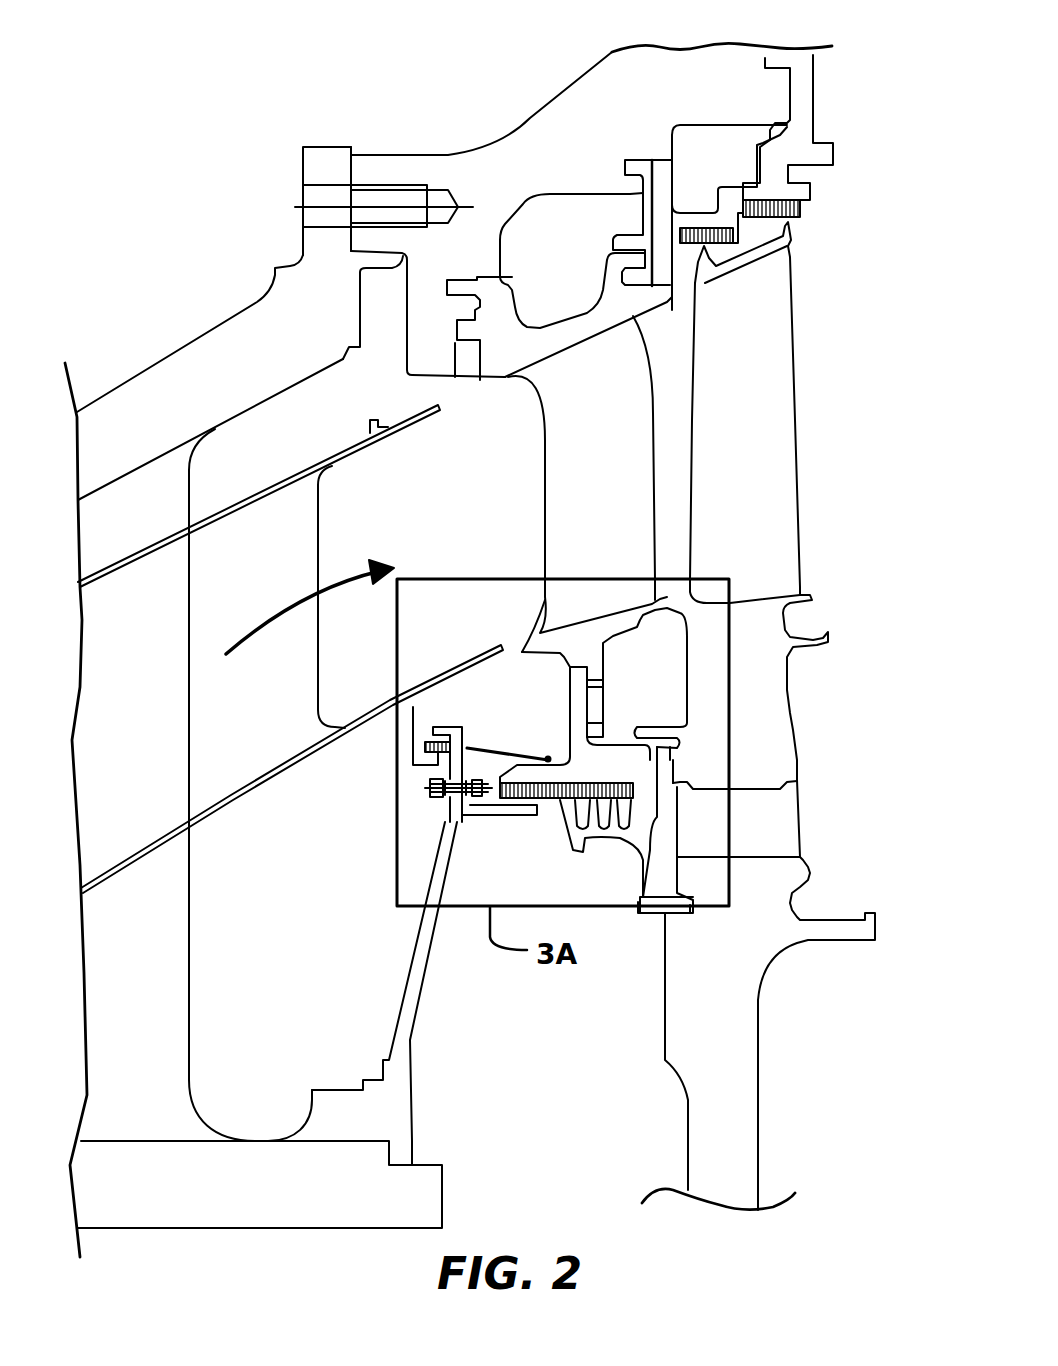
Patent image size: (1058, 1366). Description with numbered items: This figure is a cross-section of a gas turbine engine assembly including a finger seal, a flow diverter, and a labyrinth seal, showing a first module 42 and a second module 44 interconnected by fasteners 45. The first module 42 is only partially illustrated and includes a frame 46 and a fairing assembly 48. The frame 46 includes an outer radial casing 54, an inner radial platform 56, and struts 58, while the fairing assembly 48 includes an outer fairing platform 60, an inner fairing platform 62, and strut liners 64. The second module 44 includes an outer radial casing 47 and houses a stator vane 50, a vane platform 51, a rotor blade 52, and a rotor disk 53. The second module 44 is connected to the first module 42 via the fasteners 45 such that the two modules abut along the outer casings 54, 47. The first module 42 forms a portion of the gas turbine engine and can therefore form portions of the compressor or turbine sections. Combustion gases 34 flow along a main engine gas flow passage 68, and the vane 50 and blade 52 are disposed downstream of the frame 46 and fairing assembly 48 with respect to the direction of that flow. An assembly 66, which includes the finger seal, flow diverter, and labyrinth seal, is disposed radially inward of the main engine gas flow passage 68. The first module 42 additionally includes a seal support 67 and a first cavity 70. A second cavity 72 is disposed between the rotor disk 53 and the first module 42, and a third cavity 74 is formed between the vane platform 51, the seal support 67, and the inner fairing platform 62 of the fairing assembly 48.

The combustion gases 34 is at (340, 600).
The first module 42 is at (180, 208).
The second module 44 is at (495, 98).
The fasteners 45 is at (301, 197).
The frame 46 is at (162, 312).
The outer radial casing 47 is at (640, 217).
The fairing assembly 48 is at (290, 651).
The stator vane 50 is at (621, 458).
The vane platform 51 is at (630, 678).
The rotor blade 52 is at (759, 501).
The rotor disk 53 is at (756, 995).
The outer radial casing 54 is at (136, 392).
The inner radial platform 56 is at (172, 1213).
The struts 58 is at (100, 810).
The outer fairing platform 60 is at (262, 503).
The inner fairing platform 62 is at (358, 730).
The strut liners 64 is at (344, 514).
The assembly 66 is at (495, 728).
The seal support 67 is at (412, 944).
The main engine gas flow passage 68 is at (563, 521).
The first cavity 70 is at (250, 785).
The second cavity 72 is at (463, 993).
The third cavity 74 is at (596, 790).